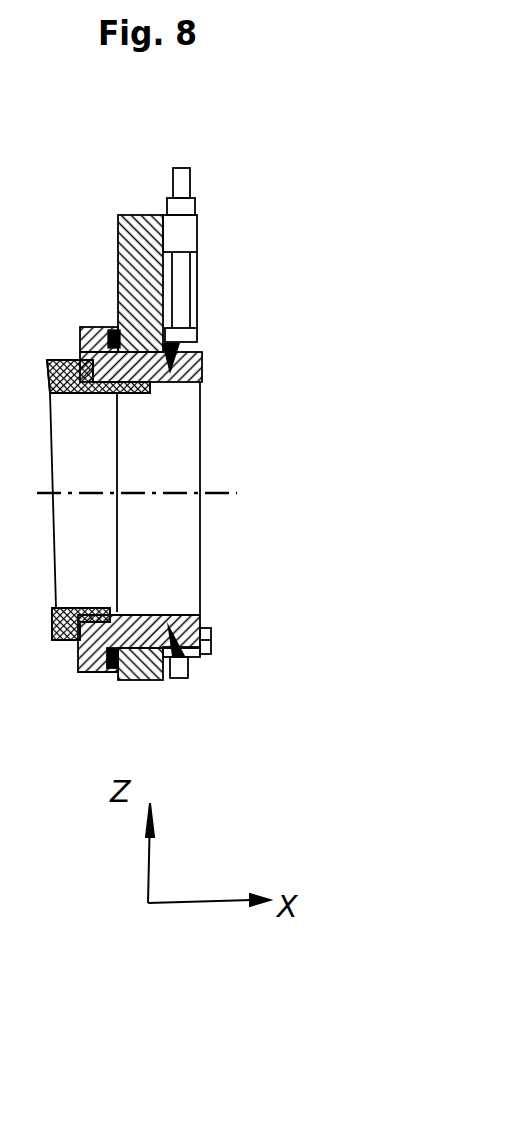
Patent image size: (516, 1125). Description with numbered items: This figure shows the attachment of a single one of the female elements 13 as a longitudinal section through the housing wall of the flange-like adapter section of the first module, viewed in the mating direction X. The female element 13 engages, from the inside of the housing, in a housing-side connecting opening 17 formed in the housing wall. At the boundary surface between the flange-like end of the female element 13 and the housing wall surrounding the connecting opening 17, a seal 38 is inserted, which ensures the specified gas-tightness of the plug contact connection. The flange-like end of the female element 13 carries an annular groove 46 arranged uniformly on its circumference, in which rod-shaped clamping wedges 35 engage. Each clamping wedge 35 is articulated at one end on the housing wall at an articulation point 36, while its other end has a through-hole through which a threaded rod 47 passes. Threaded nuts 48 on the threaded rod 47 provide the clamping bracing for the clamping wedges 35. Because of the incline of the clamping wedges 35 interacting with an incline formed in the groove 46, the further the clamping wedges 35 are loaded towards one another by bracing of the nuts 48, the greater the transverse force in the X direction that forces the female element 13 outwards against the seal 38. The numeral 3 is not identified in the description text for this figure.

The clamping block 3 is at (118, 248).
The female element 13 is at (79, 344).
The housing-side connecting opening 17 is at (143, 647).
The clamping wedge 35 is at (200, 360).
The articulation point 36 is at (212, 640).
The seal 38 is at (140, 358).
The groove 46 is at (170, 372).
The threaded rod 47 is at (192, 292).
The threaded nut 48 is at (195, 203).